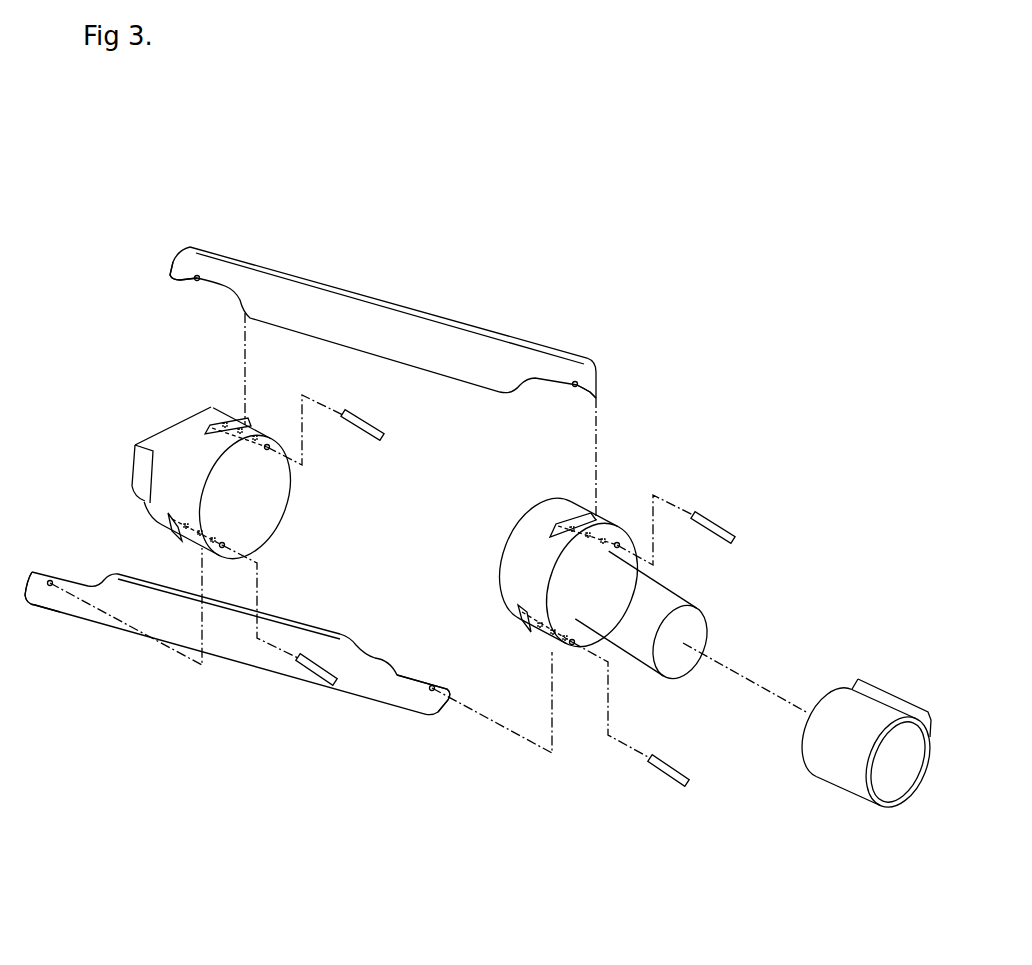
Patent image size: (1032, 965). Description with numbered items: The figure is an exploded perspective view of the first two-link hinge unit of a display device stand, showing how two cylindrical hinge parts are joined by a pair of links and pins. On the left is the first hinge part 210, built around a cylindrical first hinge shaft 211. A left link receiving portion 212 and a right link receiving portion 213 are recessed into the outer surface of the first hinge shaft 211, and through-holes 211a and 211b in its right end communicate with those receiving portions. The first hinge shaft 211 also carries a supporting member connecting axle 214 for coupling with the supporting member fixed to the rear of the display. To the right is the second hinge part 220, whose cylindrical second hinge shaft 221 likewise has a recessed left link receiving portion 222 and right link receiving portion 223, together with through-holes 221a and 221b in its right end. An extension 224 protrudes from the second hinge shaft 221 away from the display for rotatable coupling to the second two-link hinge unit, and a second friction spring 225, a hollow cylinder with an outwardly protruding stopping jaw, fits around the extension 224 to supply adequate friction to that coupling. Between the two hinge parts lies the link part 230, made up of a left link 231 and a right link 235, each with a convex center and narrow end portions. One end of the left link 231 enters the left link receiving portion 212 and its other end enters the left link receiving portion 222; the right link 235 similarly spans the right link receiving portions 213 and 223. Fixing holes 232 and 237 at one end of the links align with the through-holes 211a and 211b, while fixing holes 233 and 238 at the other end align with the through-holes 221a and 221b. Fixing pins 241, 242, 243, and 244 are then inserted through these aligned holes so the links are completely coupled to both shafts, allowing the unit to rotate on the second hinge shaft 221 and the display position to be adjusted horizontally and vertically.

The first hinge part 210 is at (202, 453).
The first hinge shaft 211 is at (268, 497).
The through-hole 211a is at (225, 547).
The through-hole 211b is at (267, 445).
The left link receiving portion 212 is at (170, 532).
The right link receiving portion 213 is at (236, 425).
The supporting member connecting axle 214 is at (135, 478).
The second hinge part 220 is at (592, 604).
The second hinge shaft 221 is at (515, 562).
The through-hole 221a is at (573, 647).
The through-hole 221b is at (617, 543).
The left link receiving portion 222 is at (520, 627).
The right link receiving portion 223 is at (559, 527).
The extension 224 is at (665, 595).
The second friction spring 225 is at (835, 708).
The link part 230 is at (278, 666).
The left link 231 is at (332, 652).
The fixing hole 232 is at (53, 588).
The fixing hole 233 is at (447, 689).
The right link 235 is at (516, 311).
The fixing hole 237 is at (199, 279).
The fixing hole 238 is at (578, 384).
The fixing pin 241 is at (312, 677).
The fixing pin 242 is at (667, 773).
The fixing pin 243 is at (382, 432).
The fixing pin 244 is at (718, 517).